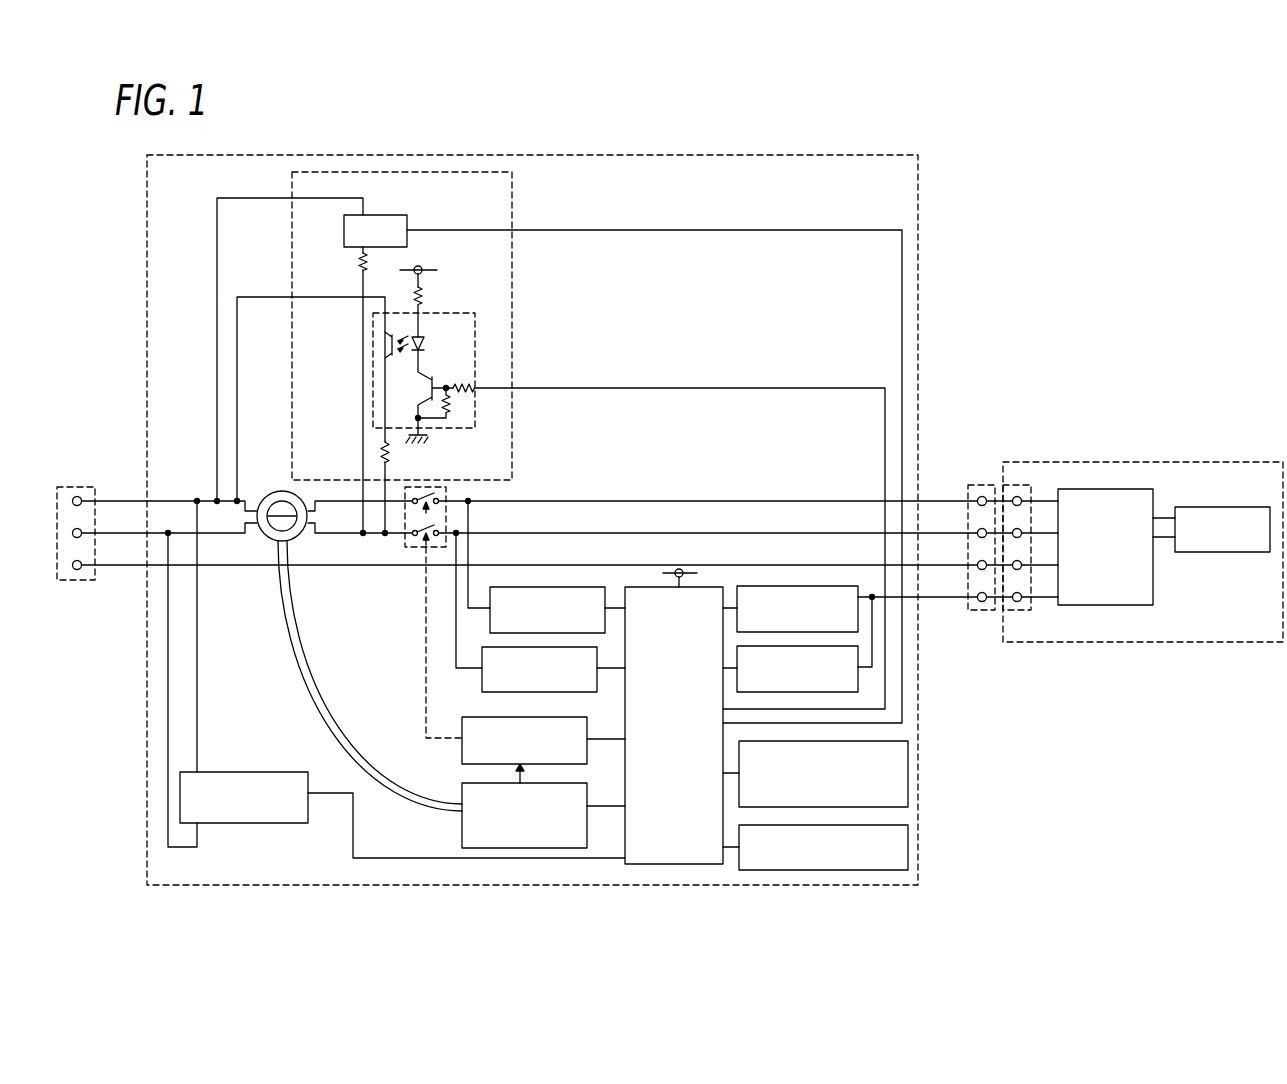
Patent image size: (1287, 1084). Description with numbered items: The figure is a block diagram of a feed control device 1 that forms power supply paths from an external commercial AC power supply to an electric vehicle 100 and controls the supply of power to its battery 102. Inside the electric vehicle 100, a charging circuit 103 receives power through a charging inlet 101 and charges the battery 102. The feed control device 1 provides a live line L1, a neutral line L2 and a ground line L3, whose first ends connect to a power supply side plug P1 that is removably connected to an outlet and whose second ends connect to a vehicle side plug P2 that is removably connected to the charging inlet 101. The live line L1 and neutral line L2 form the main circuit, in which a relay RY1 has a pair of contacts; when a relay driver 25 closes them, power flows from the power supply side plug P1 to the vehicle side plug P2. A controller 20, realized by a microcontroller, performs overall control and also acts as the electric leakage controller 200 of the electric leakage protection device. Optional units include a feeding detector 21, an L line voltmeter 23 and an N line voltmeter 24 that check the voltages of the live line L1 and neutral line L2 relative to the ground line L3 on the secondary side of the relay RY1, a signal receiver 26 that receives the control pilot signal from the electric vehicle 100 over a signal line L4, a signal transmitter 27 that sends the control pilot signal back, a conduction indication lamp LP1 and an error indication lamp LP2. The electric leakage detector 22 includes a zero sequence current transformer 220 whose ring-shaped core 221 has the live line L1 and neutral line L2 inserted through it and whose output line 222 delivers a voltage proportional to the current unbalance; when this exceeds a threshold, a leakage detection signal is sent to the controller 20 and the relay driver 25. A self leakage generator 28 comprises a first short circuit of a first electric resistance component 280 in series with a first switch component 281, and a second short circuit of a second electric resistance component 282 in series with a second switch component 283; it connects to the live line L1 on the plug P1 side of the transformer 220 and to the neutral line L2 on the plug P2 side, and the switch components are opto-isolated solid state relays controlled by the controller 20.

The feed control device 1 is at (919, 193).
The power supply side plug P1 is at (76, 582).
The vehicle side plug P2 is at (981, 485).
The live line L1 is at (173, 500).
The neutral line L2 is at (163, 531).
The ground line L3 is at (157, 567).
The signal line L4 is at (928, 598).
The controller 20 is at (706, 749).
The electric leakage controller 200 is at (703, 865).
The feeding detector 21 is at (262, 772).
The electric leakage detector 22 is at (462, 823).
The L line voltmeter 23 is at (520, 588).
The N line voltmeter 24 is at (481, 688).
The relay driver 25 is at (584, 757).
The signal receiver 26 is at (762, 590).
The signal transmitter 27 is at (860, 683).
The self leakage generator 28 is at (443, 326).
The first electric resistance component 280 is at (383, 455).
The first switch component 281 is at (462, 312).
The second electric resistance component 282 is at (360, 262).
The second switch component 283 is at (396, 221).
The zero sequence current transformer 220 is at (255, 513).
The core 221 is at (268, 537).
The output line 222 is at (292, 652).
The relay RY1 is at (414, 550).
The conduction indication lamp LP1 is at (908, 773).
The error indication lamp LP2 is at (908, 855).
The electric vehicle 100 is at (1143, 543).
The charging inlet 101 is at (1022, 611).
The battery 102 is at (1237, 551).
The charging circuit 103 is at (1148, 592).